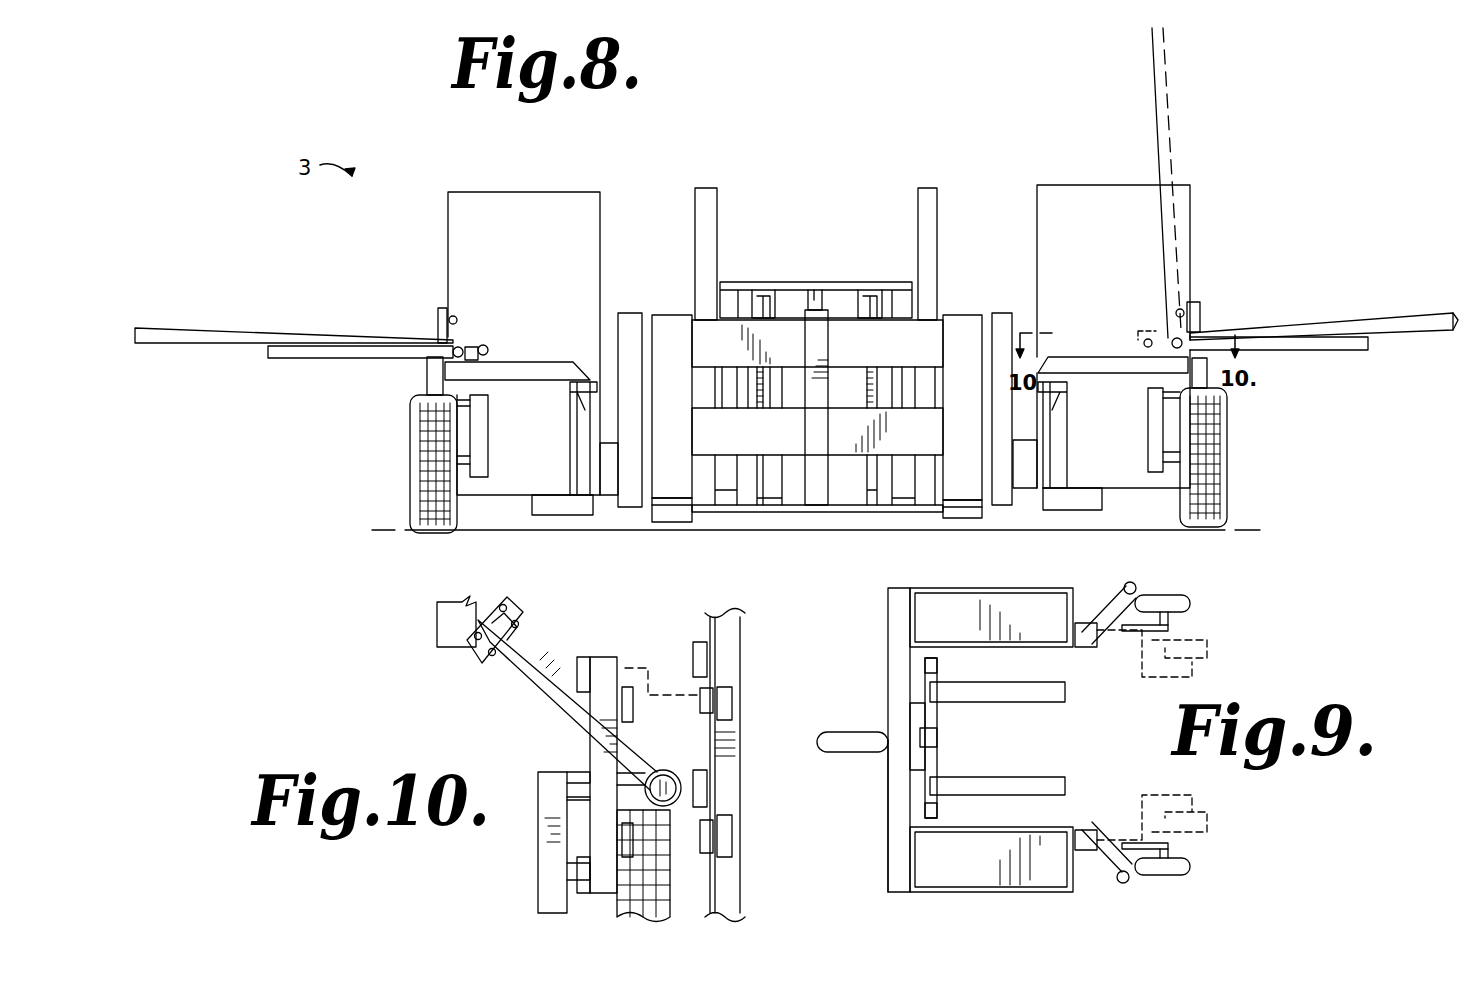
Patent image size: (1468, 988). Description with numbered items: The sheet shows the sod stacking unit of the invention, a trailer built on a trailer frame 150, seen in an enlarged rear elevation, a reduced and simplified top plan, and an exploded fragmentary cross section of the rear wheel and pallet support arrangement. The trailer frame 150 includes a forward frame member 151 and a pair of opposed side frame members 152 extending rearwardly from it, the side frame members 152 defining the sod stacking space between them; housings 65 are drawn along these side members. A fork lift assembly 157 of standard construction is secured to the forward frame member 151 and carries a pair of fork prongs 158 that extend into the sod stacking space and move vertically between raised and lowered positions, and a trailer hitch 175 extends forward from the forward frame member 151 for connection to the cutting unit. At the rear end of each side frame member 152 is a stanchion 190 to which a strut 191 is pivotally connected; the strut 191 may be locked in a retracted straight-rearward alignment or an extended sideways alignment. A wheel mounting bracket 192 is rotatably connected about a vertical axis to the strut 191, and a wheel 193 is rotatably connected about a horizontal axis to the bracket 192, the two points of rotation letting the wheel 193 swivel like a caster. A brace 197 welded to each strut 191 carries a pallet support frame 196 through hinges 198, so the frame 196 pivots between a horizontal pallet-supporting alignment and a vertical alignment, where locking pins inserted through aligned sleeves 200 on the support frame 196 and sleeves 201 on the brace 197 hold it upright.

In FIG. 8, the housing 65 is at (448, 222).
In FIG. 9, the housing 65 is at (945, 590).
In FIG. 9, the trailer frame 150 is at (888, 588).
In FIG. 9, the forward frame member 151 is at (895, 868).
In FIG. 8, the side frame members 152 is at (552, 506).
In FIG. 9, the side frame members 152 is at (1093, 643).
In FIG. 8, the fork lift assembly 157 is at (700, 298).
In FIG. 9, the fork lift assembly 157 is at (925, 682).
In FIG. 8, the fork prongs 158 is at (668, 508).
In FIG. 9, the fork prongs 158 is at (1020, 702).
In FIG. 9, the trailer hitch 175 is at (840, 752).
In FIG. 8, the stanchion 190 is at (570, 466).
In FIG. 9, the stanchion 190 is at (1085, 828).
In FIG. 10, the stanchion 190 is at (487, 598).
In FIG. 8, the strut 191 is at (537, 362).
In FIG. 9, the strut 191 is at (1107, 605).
In FIG. 10, the strut 191 is at (527, 672).
In FIG. 8, the wheel mounting bracket 192 is at (487, 421).
In FIG. 9, the wheel mounting bracket 192 is at (1170, 628).
In FIG. 10, the wheel mounting bracket 192 is at (547, 857).
In FIG. 8, the wheel 193 is at (413, 465).
In FIG. 9, the wheel 193 is at (1195, 865).
In FIG. 10, the wheel 193 is at (650, 873).
In FIG. 8, the pallet support frame 196 is at (183, 328).
In FIG. 10, the pallet support frame 196 is at (730, 637).
In FIG. 8, the brace 197 is at (488, 345).
In FIG. 10, the brace 197 is at (592, 760).
In FIG. 8, the hinges 198 is at (460, 347).
In FIG. 10, the sleeves 200 is at (698, 712).
In FIG. 10, the sleeves 201 is at (578, 665).